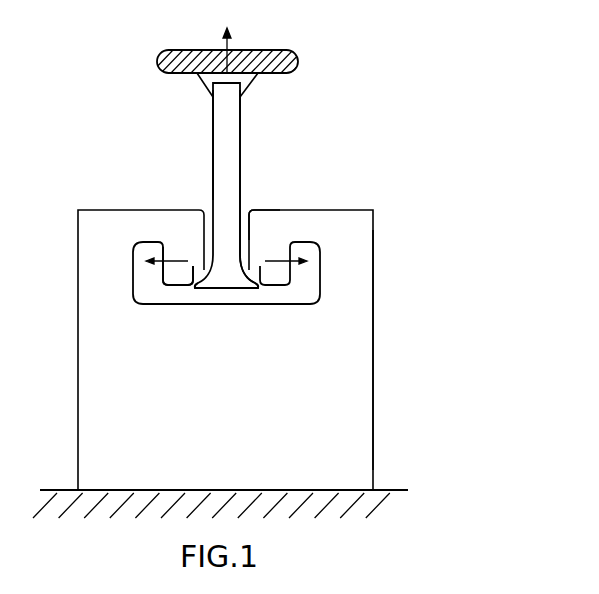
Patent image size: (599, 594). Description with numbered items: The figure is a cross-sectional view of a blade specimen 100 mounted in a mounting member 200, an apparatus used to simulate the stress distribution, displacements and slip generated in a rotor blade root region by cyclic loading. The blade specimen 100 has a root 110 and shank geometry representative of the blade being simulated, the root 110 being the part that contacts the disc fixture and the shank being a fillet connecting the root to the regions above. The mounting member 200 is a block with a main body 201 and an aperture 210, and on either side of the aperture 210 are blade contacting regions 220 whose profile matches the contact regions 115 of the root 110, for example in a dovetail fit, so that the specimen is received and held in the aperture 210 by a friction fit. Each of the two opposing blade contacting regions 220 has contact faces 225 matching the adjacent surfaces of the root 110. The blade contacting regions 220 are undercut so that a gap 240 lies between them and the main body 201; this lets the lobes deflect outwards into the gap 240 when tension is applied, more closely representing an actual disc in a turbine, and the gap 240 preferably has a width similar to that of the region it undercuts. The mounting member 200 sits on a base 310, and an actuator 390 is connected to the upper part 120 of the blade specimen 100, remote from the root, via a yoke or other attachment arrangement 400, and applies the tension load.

The blade specimen 100 is at (240, 152).
The root 110 is at (212, 275).
The contact regions 115 is at (247, 254).
The upper part 120 is at (233, 118).
The mounting member 200 is at (455, 359).
The main body 201 is at (348, 268).
The aperture 210 is at (250, 197).
The blade contacting regions 220 is at (183, 255).
The contact faces 225 is at (200, 267).
The gap 240 is at (140, 258).
The base 310 is at (390, 507).
The actuator 390 is at (180, 52).
The attachment arrangement 400 is at (208, 88).